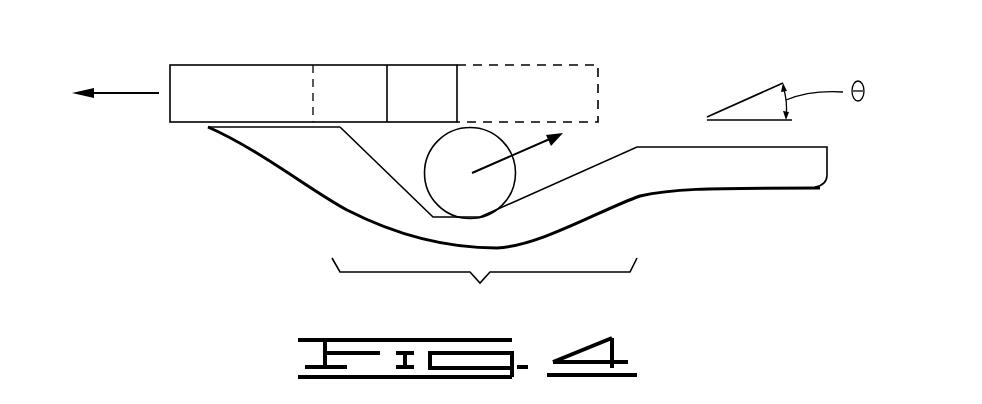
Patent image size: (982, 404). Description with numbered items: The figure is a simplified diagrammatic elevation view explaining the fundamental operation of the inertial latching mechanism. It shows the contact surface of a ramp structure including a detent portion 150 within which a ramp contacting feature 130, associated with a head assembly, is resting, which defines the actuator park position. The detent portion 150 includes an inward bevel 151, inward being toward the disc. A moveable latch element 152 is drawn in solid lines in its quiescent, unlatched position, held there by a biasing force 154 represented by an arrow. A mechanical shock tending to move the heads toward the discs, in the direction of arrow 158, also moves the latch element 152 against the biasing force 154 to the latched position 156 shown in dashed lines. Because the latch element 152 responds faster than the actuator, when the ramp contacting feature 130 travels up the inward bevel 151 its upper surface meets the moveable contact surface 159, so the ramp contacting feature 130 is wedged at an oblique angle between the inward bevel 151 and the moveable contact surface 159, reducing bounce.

The ramp contacting feature 130 is at (442, 173).
The detent portion 150 is at (484, 289).
The inward bevel 151 is at (595, 167).
The latch element 152 is at (222, 78).
The biasing force 154 is at (130, 93).
The latched position 156 is at (530, 80).
The direction of applied mechanical shock 158 is at (523, 153).
The moveable contact surface 159 is at (387, 66).